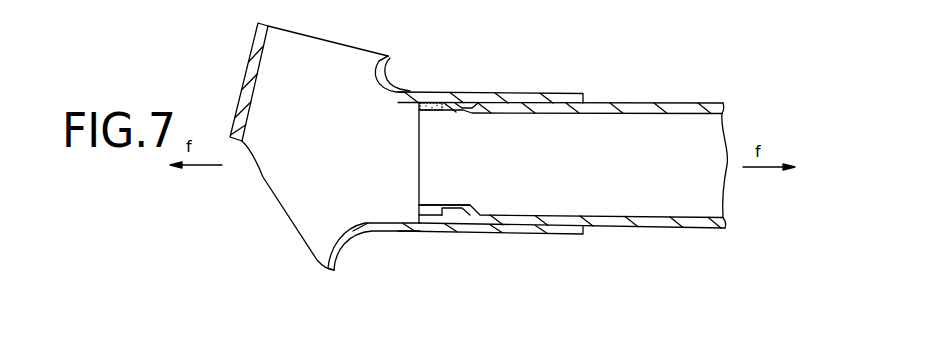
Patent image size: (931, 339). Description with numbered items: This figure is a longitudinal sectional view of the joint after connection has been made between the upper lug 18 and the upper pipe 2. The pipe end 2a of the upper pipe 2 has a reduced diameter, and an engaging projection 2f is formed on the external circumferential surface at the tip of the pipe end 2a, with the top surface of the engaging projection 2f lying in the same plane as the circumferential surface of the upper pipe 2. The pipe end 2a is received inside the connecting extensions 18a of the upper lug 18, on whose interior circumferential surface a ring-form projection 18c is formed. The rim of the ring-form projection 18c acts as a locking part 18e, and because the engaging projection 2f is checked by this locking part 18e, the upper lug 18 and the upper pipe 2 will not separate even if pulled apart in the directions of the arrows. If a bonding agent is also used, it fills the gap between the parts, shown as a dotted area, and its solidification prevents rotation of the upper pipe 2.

The upper lug 18 is at (241, 90).
The connecting extensions 18a is at (533, 92).
The ring-form projection 18c is at (445, 102).
The locking part 18e is at (445, 213).
The upper pipe 2 is at (571, 167).
The pipe end 2a is at (603, 102).
The engaging projection 2f is at (440, 223).